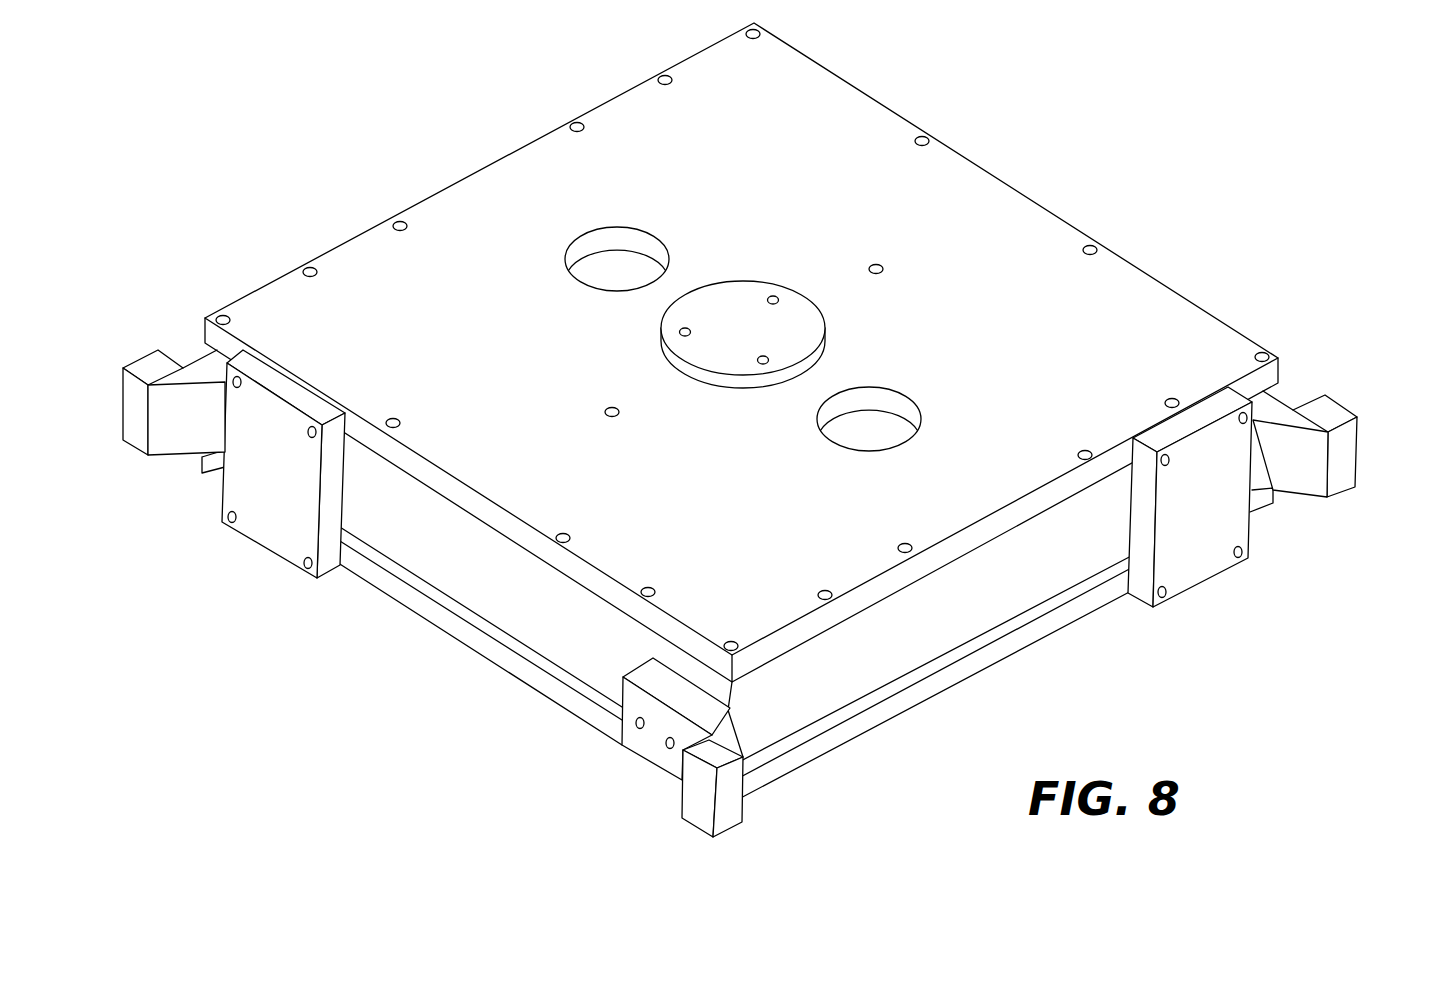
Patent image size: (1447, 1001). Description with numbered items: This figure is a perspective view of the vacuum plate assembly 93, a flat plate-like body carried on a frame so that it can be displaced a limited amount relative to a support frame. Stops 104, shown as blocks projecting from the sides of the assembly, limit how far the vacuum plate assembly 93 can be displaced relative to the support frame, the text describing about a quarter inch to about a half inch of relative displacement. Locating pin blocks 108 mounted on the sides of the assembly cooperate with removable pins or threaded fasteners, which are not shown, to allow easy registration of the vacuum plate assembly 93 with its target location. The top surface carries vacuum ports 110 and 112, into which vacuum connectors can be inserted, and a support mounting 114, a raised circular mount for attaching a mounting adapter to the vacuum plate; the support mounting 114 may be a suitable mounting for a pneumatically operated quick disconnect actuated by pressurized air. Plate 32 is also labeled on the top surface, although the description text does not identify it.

The vacuum plate assembly 93 is at (1092, 138).
The top plate 32 is at (1160, 312).
The stops 104 is at (137, 432).
The locating pin blocks 108 is at (272, 512).
The vacuum port 110 is at (876, 402).
The vacuum port 112 is at (619, 243).
The support mounting 114 is at (747, 298).